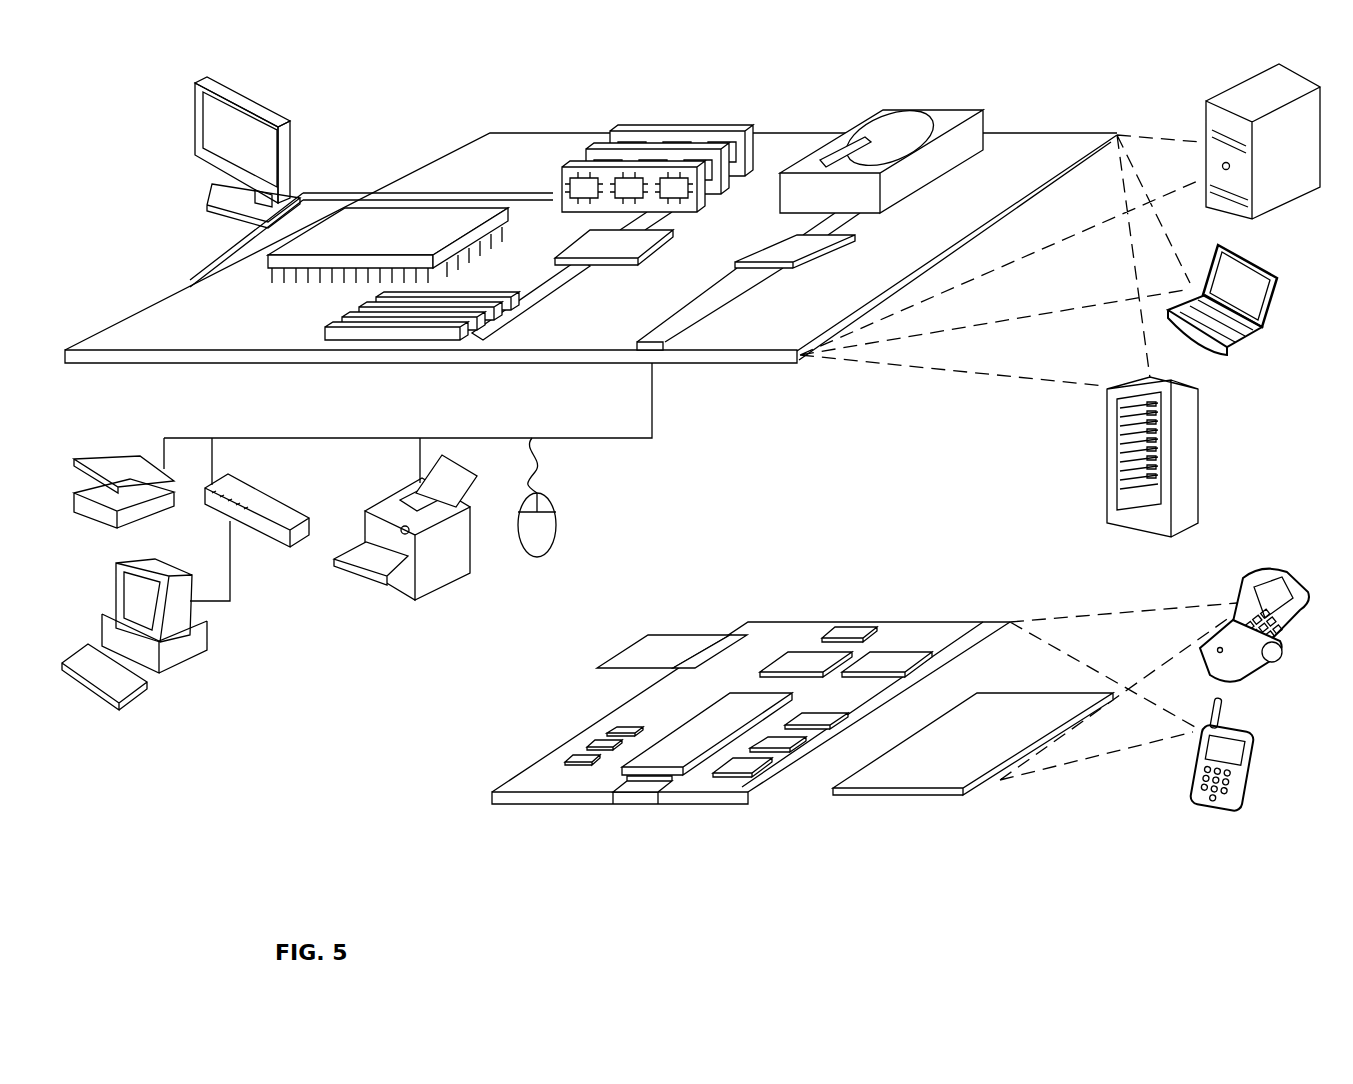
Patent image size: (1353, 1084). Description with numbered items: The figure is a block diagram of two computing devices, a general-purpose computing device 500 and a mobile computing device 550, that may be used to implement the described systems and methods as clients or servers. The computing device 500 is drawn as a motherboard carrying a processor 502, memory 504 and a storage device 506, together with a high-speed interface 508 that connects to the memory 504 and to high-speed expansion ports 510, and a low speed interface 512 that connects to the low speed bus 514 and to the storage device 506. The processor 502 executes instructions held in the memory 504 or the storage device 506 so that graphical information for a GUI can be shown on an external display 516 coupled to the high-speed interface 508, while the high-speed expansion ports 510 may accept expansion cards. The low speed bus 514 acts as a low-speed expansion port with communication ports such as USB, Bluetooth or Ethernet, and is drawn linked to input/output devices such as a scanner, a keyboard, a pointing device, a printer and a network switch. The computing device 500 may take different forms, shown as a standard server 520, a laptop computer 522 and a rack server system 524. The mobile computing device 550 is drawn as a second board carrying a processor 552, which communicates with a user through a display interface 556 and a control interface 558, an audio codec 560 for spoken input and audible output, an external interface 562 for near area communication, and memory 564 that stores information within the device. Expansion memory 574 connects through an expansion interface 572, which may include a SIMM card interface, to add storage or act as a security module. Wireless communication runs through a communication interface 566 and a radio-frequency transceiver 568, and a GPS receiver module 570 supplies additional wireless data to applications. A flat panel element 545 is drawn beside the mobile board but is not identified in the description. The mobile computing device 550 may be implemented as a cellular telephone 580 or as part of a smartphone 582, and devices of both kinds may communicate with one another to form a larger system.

The computing device 500 is at (409, 111).
The processor 502 is at (280, 260).
The memory 504 is at (618, 124).
The storage device 506 is at (868, 116).
The high-speed interface 508 is at (588, 242).
The high-speed expansion ports 510 is at (337, 323).
The low speed interface 512 is at (773, 247).
The low speed bus 514 is at (667, 352).
The display 516 is at (203, 76).
The standard server 520 is at (1206, 115).
The laptop computer 522 is at (1270, 278).
The rack server system 524 is at (1109, 481).
The display panel 545 is at (930, 777).
The computing device 550 is at (469, 798).
The processor 552 is at (678, 757).
The display interface 556 is at (753, 767).
The control interface 558 is at (783, 743).
The audio codec 560 is at (813, 720).
The external interface 562 is at (640, 793).
The memory 564 is at (583, 748).
The communication interface 566 is at (805, 660).
The transceiver 568 is at (888, 658).
The GPS receiver module 570 is at (860, 624).
The expansion interface 572 is at (733, 633).
The expansion memory 574 is at (650, 637).
The cellular telephone 580 is at (1258, 574).
The smartphone 582 is at (1197, 763).